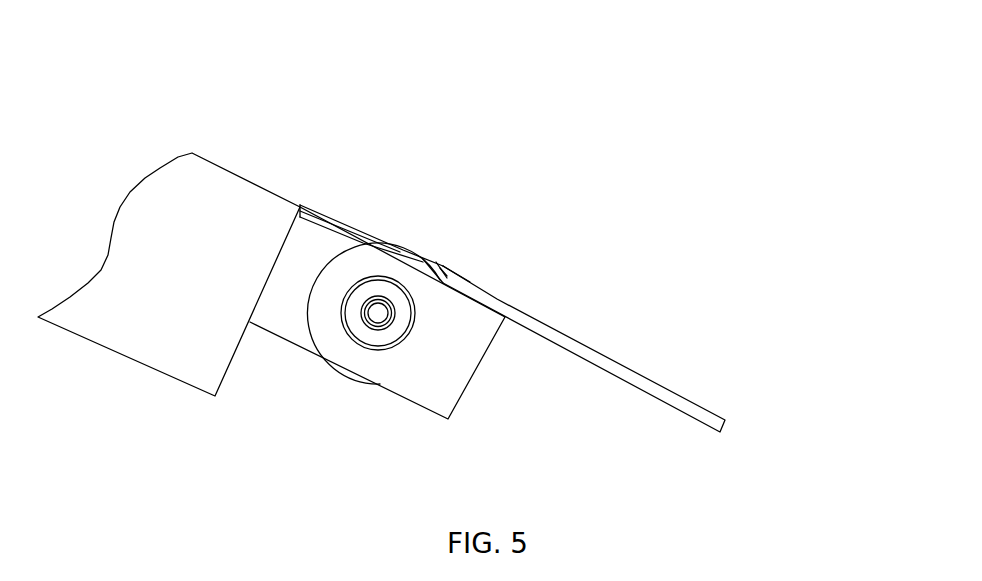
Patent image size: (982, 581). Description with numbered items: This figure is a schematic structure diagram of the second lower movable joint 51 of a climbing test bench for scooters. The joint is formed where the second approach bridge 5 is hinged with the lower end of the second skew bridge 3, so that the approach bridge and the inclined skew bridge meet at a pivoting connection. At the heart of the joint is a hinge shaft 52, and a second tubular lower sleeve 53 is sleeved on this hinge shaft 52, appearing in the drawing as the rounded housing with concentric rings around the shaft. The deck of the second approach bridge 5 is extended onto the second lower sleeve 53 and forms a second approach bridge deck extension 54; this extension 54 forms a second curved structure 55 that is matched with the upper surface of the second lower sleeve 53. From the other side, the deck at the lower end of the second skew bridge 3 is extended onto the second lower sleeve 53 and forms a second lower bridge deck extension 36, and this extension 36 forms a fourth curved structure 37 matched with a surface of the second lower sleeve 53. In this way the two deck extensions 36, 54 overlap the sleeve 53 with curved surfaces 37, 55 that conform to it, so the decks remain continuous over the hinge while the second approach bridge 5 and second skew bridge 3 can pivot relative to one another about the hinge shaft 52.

The second skew bridge 3 is at (186, 340).
The second approach bridge 5 is at (644, 340).
The second lower bridge deck extension 36 is at (270, 135).
The fourth curved structure 37 is at (324, 131).
The second lower movable joint 51 is at (377, 365).
The hinge shaft 52 is at (463, 350).
The second tubular lower sleeve 53 is at (386, 149).
The second approach bridge deck extension 54 is at (605, 227).
The second curved structure 55 is at (578, 200).